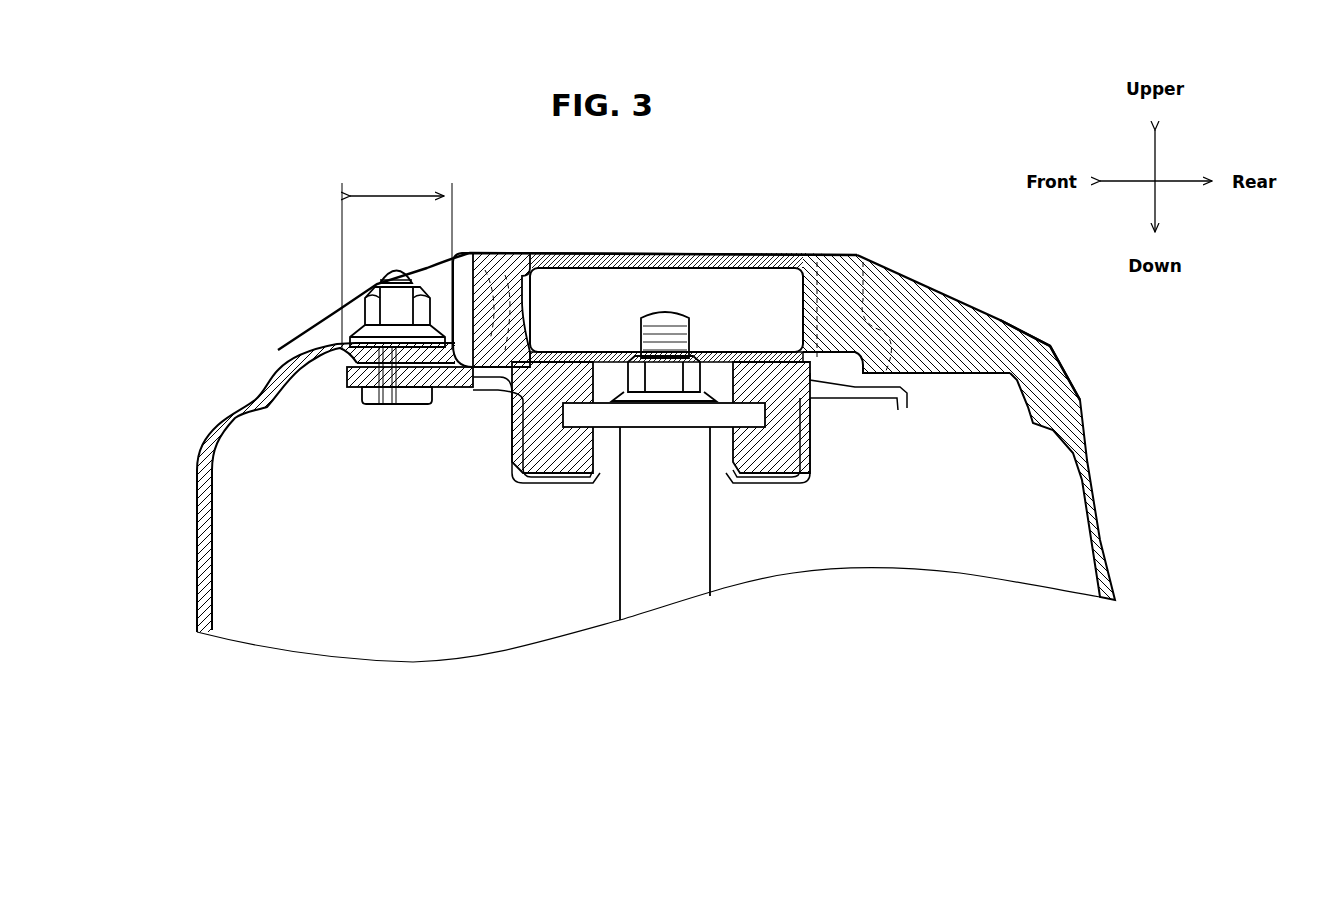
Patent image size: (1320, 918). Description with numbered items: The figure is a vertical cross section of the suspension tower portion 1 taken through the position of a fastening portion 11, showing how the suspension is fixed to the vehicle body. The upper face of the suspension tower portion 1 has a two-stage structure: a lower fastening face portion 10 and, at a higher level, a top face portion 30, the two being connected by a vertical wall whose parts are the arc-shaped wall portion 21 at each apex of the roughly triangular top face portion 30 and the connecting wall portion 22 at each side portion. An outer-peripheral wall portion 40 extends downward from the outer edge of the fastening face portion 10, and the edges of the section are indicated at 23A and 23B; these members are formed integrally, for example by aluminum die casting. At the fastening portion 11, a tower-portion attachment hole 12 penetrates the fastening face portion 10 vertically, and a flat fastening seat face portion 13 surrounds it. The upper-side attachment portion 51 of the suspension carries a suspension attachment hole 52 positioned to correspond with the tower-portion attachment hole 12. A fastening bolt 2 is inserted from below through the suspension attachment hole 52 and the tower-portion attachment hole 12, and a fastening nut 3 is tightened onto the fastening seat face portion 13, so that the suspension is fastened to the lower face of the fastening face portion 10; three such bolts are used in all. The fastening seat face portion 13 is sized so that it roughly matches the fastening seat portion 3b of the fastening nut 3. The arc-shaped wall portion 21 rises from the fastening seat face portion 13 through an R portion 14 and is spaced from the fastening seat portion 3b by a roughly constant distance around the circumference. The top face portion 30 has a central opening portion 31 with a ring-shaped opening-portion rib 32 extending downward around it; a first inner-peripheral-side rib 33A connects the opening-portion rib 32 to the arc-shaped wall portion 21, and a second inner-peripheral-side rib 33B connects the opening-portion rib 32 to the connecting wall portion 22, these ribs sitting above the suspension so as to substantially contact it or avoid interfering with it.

The suspension tower portion 1 is at (275, 227).
The fastening bolt 2 is at (386, 406).
The fastening nut 3 is at (427, 300).
The fastening seat portion 3b is at (263, 380).
The fastening face portion 10 is at (320, 362).
The fastening portion 11 is at (372, 268).
The tower-portion attachment hole 12 is at (390, 347).
The fastening seat face portion 13 is at (397, 261).
The R portion 14 is at (468, 292).
The arc-shaped wall portion 21 is at (490, 256).
The connecting wall portion 22 is at (868, 328).
The front edge 23A is at (283, 343).
The rear edge 23B is at (1013, 318).
The top face portion 30 is at (775, 258).
The opening portion 31 is at (740, 258).
The opening-portion rib 32 is at (535, 280).
The first inner-peripheral-side rib 33A is at (515, 296).
The second inner-peripheral-side rib 33B is at (835, 282).
The outer-peripheral wall portion 40 is at (197, 510).
The upper-side attachment portion 51 is at (782, 352).
The suspension attachment hole 52 is at (362, 388).